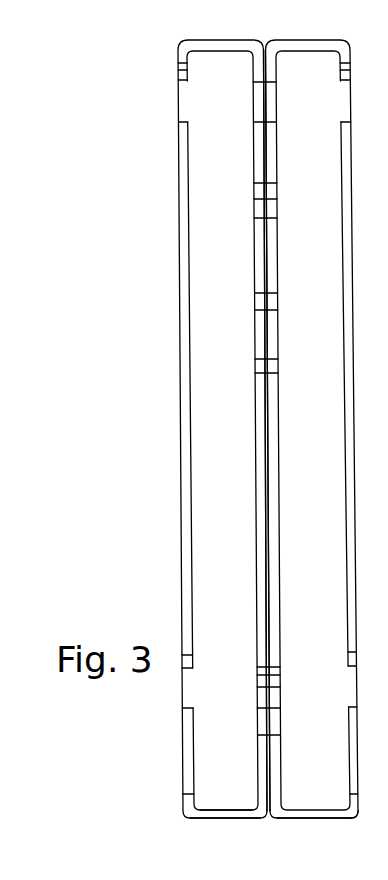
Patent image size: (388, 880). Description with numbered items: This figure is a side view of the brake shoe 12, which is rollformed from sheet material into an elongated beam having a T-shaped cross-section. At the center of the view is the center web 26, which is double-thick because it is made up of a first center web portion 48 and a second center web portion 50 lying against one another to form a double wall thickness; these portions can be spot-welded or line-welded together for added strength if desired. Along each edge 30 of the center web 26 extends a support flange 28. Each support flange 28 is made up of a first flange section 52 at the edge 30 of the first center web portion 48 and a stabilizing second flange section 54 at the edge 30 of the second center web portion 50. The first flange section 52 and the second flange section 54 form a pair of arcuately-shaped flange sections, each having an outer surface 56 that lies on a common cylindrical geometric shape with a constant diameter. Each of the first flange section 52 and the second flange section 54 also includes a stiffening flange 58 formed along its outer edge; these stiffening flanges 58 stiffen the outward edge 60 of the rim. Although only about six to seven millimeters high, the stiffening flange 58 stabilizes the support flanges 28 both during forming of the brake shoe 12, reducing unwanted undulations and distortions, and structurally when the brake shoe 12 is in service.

The brake shoe 12 is at (140, 148).
The center web 26 is at (252, 266).
The support flange 28 is at (306, 826).
The edge 30 is at (264, 812).
The first center web portion 48 is at (258, 763).
The second center web portion 50 is at (281, 777).
The first flange section 52 is at (216, 812).
The second flange section 54 is at (345, 822).
The outer surface 56 is at (233, 820).
The stiffening flange 58 is at (183, 802).
The outward edge 60 is at (179, 46).